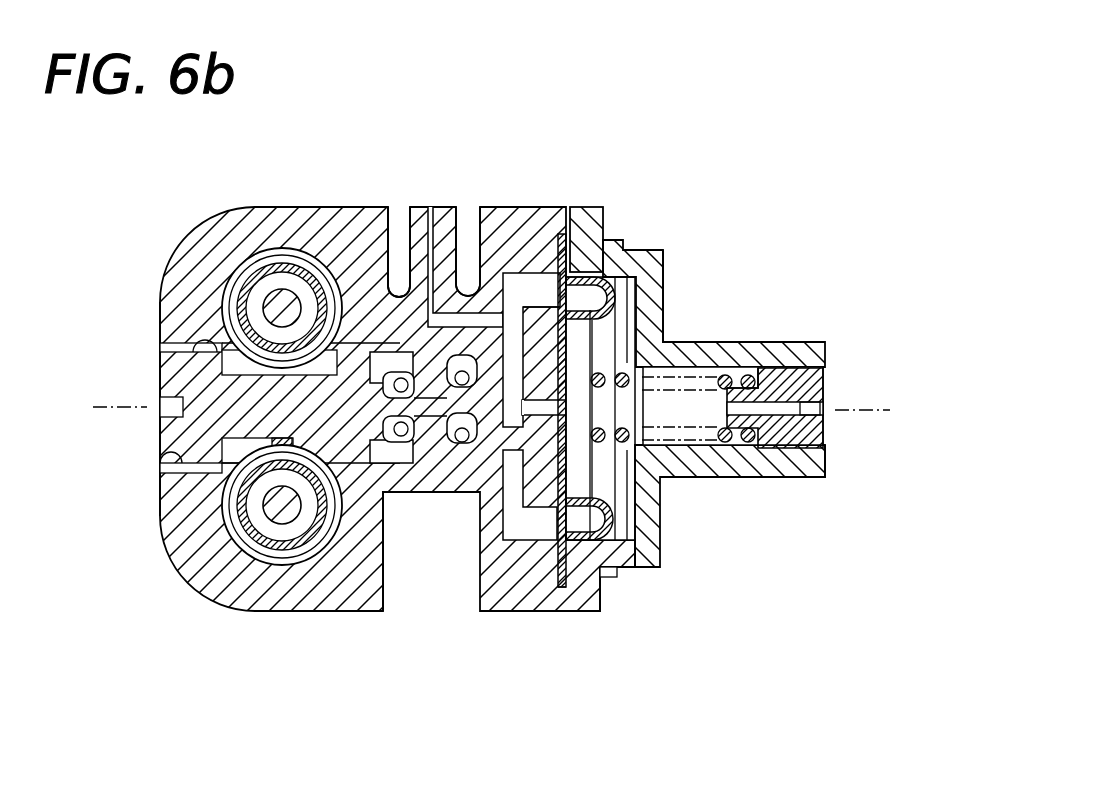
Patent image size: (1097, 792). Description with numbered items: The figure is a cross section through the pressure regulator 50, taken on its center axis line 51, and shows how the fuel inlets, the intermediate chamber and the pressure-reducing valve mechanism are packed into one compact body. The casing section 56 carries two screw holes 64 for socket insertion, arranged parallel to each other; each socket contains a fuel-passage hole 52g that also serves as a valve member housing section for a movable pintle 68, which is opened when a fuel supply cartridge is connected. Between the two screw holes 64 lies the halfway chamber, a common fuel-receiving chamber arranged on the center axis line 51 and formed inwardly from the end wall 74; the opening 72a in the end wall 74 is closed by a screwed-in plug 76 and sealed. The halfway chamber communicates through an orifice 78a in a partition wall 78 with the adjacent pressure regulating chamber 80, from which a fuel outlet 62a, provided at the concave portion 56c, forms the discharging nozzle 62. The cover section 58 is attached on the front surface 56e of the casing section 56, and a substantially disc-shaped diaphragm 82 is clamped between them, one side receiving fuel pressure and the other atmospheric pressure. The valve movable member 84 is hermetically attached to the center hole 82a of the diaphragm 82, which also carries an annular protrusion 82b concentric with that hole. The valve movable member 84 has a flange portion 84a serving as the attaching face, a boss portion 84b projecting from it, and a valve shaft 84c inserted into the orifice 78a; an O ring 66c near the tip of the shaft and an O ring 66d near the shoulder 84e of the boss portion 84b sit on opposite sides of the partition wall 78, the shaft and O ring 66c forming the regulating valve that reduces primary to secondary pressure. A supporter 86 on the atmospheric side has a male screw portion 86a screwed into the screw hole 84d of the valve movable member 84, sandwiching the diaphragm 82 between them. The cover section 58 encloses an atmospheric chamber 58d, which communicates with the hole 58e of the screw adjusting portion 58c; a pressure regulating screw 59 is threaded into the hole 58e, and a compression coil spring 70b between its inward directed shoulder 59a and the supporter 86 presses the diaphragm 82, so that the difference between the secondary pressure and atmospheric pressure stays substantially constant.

The pressure regulator 50 is at (712, 250).
The center axis line 51 is at (118, 407).
The fuel-passage hole 52g is at (268, 264).
The casing section 56 is at (343, 206).
The concave portion 56c is at (396, 272).
The front surface 56e is at (583, 615).
The cover section 58 is at (665, 556).
The screw adjusting portion 58c is at (818, 478).
The atmospheric chamber 58d is at (628, 278).
The hole 58e is at (826, 379).
The pressure regulating screw 59 is at (828, 439).
The inward directed shoulder 59a is at (752, 364).
The discharging nozzle 62 is at (468, 272).
The fuel outlet 62a is at (434, 206).
The screw hole 64 is at (312, 206).
The O ring 66c is at (403, 430).
The O ring 66d is at (393, 437).
The pintle 68 is at (277, 517).
The compression coil spring 70b is at (753, 442).
The opening 72a is at (185, 455).
The end wall 74 is at (159, 312).
The plug 76 is at (159, 430).
The partition wall 78 is at (433, 446).
The orifice 78a is at (464, 444).
The pressure regulating chamber 80 is at (543, 290).
The diaphragm 82 is at (566, 262).
The center hole 82a is at (642, 472).
The annular protrusion 82b is at (614, 300).
The valve movable member 84 is at (562, 505).
The flange portion 84a is at (512, 292).
The boss portion 84b is at (541, 514).
The valve shaft 84c is at (386, 408).
The screw hole 84d is at (560, 357).
The shoulder 84e is at (452, 357).
The supporter 86 is at (592, 483).
The male screw portion 86a is at (619, 568).